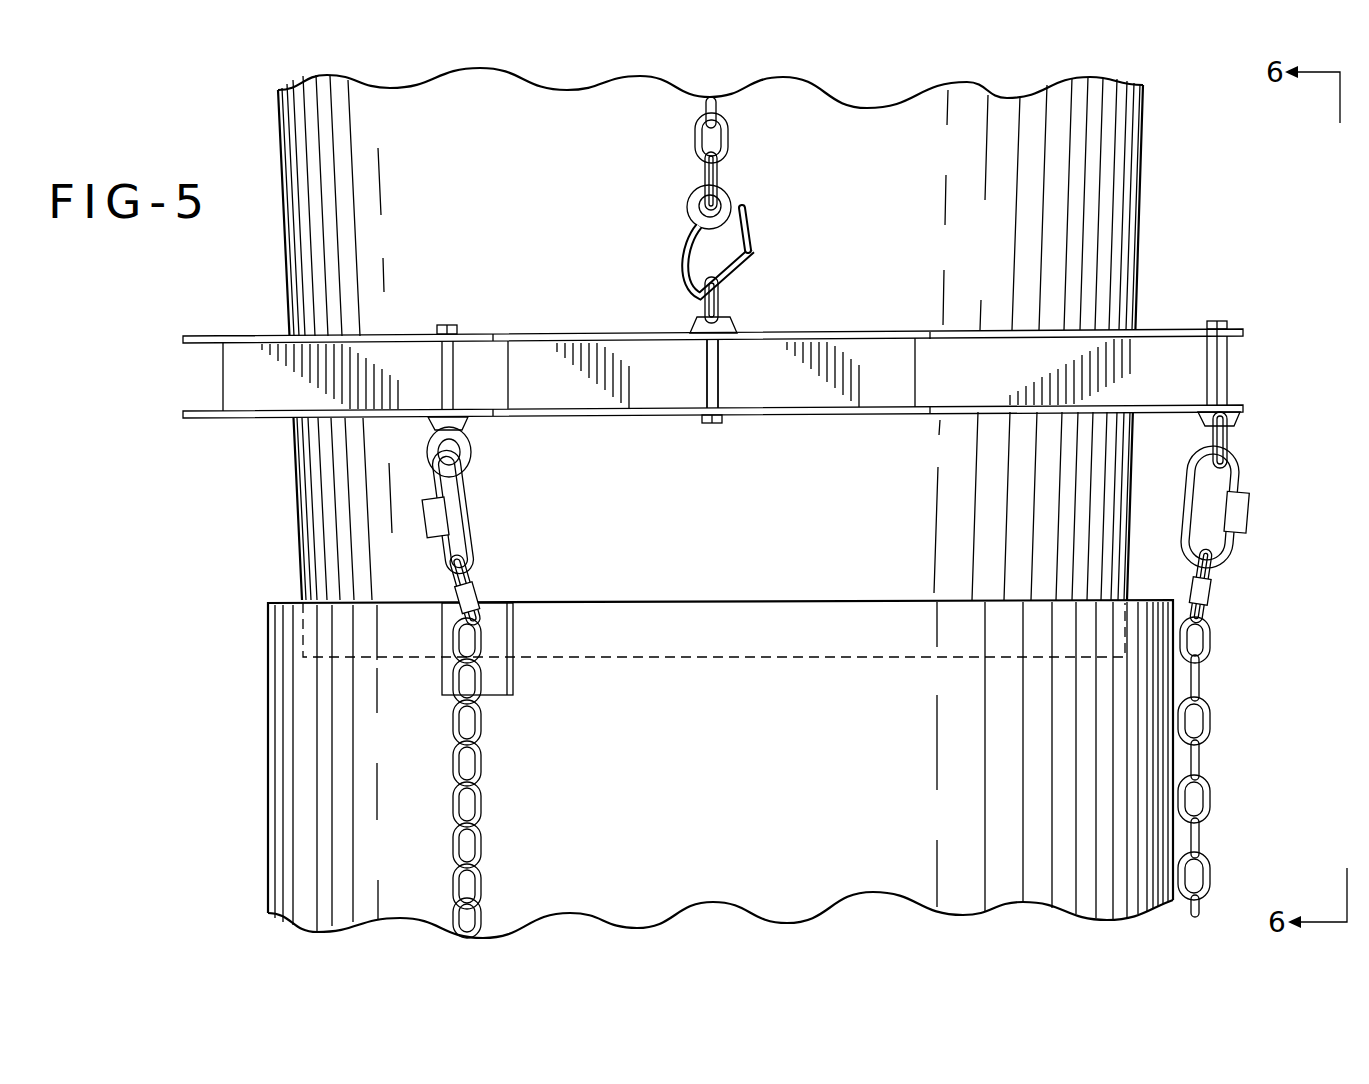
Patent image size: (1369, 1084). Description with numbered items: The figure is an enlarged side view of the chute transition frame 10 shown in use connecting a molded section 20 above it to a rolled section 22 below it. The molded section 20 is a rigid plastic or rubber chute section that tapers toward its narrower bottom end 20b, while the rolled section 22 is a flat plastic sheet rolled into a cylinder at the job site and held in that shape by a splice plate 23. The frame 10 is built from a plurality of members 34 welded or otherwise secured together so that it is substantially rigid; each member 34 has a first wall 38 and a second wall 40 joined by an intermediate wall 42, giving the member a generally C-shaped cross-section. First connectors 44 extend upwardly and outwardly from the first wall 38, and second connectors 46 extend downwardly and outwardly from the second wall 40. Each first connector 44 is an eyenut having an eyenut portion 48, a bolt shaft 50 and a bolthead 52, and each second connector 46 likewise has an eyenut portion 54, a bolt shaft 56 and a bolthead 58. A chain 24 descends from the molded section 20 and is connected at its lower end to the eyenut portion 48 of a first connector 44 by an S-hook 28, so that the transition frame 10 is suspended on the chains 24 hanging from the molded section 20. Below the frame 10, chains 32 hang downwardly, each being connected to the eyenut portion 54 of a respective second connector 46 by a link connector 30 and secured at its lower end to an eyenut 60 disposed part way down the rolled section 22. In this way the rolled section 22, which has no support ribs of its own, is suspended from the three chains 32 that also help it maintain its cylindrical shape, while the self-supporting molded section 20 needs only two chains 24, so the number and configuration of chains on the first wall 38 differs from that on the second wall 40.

The chute transition frame 10 is at (717, 362).
The molded section 20 is at (1148, 213).
The bottom end 20b is at (710, 657).
The rolled section 22 is at (260, 750).
The splice plate 23 is at (1168, 766).
The chains 24 is at (688, 130).
The S-hook 28 is at (684, 205).
The link connector 30 is at (482, 510).
The chains 32 is at (492, 800).
The members 34 is at (392, 330).
The first wall 38 is at (202, 336).
The second wall 40 is at (200, 418).
The intermediate wall 42 is at (222, 382).
The first connectors 44 is at (728, 372).
The second connectors 46 is at (486, 457).
The eyenut portion 48 is at (694, 318).
The bolt shaft 50 is at (706, 378).
The bolthead 52 is at (711, 423).
The eyenut portion 54 is at (475, 442).
The bolt shaft 56 is at (441, 370).
The bolthead 58 is at (446, 324).
The eyenut 60 is at (452, 642).